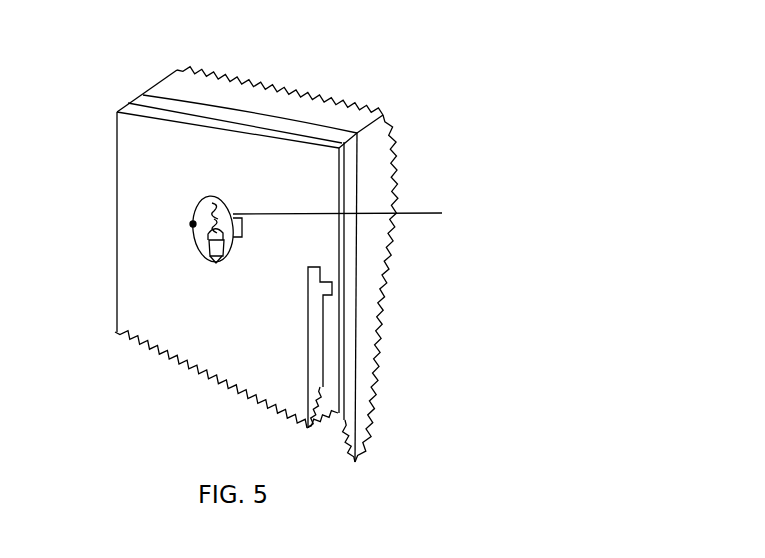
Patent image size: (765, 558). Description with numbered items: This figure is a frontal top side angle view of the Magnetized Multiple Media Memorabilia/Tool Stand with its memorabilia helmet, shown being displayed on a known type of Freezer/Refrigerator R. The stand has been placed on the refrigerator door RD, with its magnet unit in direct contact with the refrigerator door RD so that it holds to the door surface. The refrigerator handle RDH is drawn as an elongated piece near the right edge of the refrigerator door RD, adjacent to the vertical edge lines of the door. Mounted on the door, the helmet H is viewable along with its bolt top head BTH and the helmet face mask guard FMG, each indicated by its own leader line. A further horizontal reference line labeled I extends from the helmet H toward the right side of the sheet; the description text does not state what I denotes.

The refrigerator R is at (257, 231).
The refrigerator door RD is at (218, 328).
The refrigerator door handle RDH is at (307, 368).
The head of user H is at (198, 203).
The Bluetooth headset BTH is at (192, 225).
The face mask / mouth guard FMG is at (217, 262).
The line of sight / image axis I is at (467, 221).